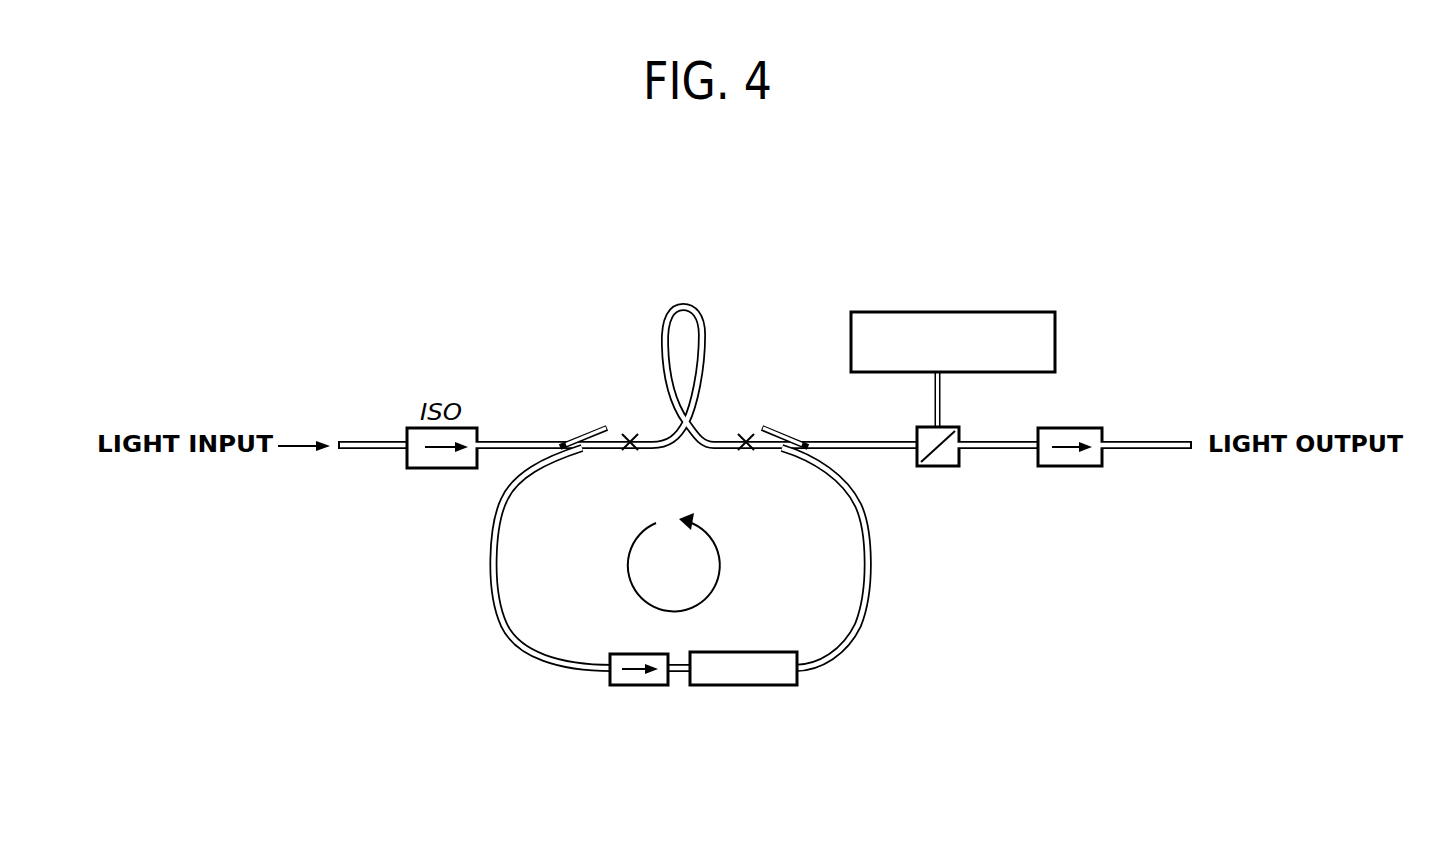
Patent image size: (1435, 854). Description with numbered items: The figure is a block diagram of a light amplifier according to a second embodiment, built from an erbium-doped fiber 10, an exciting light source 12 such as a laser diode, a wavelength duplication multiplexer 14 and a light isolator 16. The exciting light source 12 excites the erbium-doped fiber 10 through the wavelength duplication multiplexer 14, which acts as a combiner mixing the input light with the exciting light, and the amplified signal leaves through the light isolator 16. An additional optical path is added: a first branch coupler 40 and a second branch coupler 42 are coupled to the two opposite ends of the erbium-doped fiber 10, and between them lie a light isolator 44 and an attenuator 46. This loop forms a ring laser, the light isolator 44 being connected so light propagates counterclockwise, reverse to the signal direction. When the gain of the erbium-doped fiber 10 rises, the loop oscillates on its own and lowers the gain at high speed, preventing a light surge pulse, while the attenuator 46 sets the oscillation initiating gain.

The erbium-doped fiber 10 is at (666, 353).
The exciting light source 12 is at (921, 312).
The wavelength duplication multiplexer 14 is at (938, 467).
The light isolator 16 is at (1070, 467).
The first branch coupler 40 is at (571, 434).
The second branch coupler 42 is at (788, 432).
The light isolator 44 is at (647, 654).
The attenuator 46 is at (710, 652).